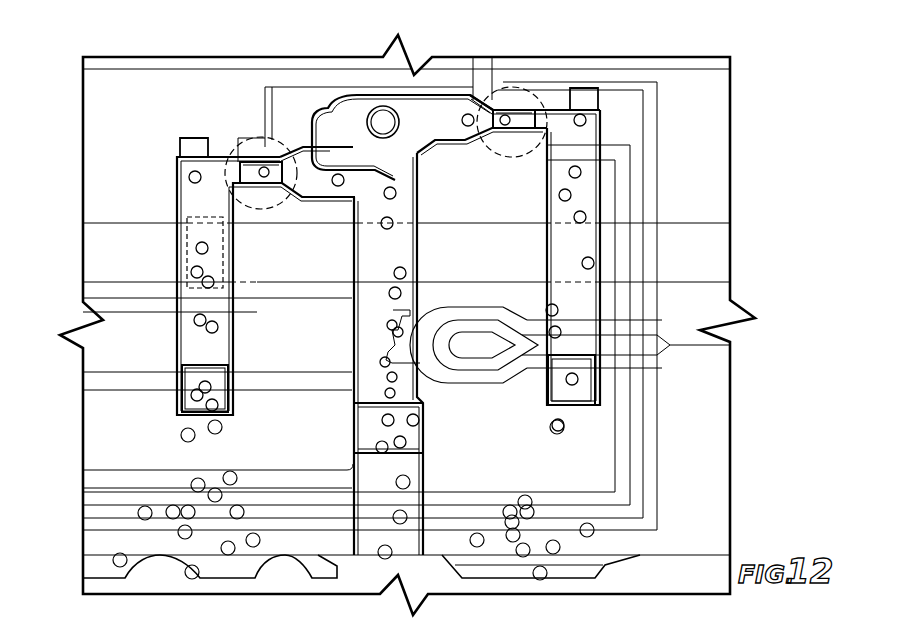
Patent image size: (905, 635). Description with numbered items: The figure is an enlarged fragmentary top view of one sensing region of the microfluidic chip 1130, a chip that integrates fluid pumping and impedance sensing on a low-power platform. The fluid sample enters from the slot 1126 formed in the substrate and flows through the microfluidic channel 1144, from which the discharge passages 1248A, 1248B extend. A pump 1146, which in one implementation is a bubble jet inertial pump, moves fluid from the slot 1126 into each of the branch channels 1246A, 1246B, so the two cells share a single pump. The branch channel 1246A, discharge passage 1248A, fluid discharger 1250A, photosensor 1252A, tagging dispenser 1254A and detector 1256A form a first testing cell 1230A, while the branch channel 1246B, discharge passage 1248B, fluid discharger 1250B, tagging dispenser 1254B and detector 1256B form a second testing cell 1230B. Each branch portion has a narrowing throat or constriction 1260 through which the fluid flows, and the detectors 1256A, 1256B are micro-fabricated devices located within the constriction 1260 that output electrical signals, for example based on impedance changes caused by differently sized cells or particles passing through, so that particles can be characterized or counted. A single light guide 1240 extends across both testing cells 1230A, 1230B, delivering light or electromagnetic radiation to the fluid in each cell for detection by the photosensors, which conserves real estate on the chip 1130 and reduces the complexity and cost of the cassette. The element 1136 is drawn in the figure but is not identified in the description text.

The slot 1126 is at (702, 573).
The microfluidic chip 1130 is at (743, 133).
The feed traces 1136 is at (615, 127).
The microfluidic channel 1144 is at (358, 354).
The pump 1146 is at (423, 417).
The first testing cell 1230A is at (166, 156).
The second testing cell 1230B is at (607, 104).
The light guide 1240 is at (705, 224).
The branch channel 1246A is at (177, 203).
The branch channel 1246B is at (600, 207).
The discharge passage 1248A is at (203, 387).
The discharge passage 1248B is at (578, 379).
The fluid discharger 1250A is at (198, 364).
The fluid discharger 1250B is at (580, 355).
The photosensor 1252A is at (190, 253).
The tagging dispenser 1254A is at (192, 137).
The tagging dispenser 1254B is at (588, 88).
The detector 1256A is at (251, 172).
The detector 1256B is at (505, 125).
The constriction 1260 is at (272, 158).